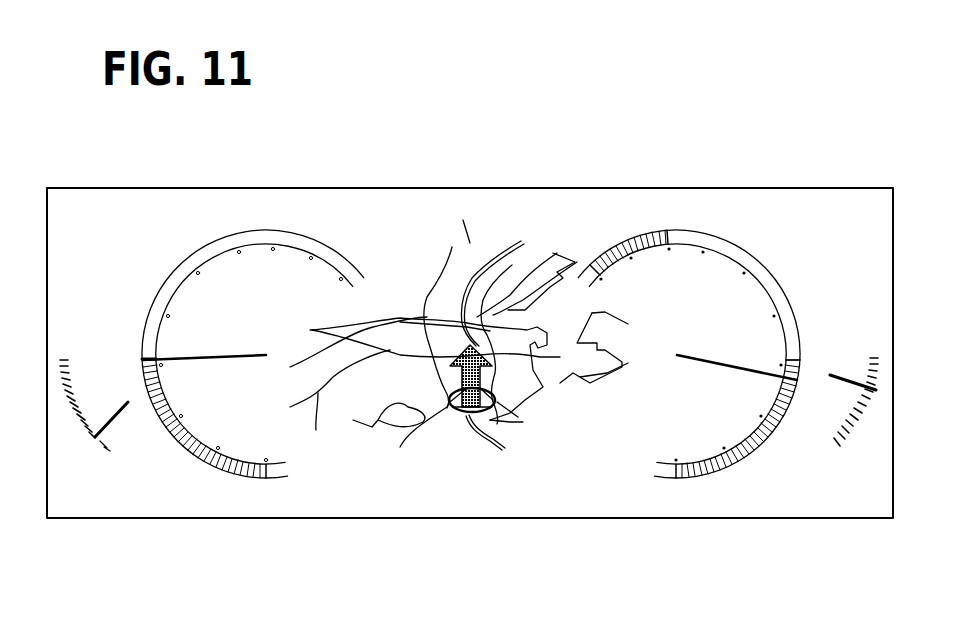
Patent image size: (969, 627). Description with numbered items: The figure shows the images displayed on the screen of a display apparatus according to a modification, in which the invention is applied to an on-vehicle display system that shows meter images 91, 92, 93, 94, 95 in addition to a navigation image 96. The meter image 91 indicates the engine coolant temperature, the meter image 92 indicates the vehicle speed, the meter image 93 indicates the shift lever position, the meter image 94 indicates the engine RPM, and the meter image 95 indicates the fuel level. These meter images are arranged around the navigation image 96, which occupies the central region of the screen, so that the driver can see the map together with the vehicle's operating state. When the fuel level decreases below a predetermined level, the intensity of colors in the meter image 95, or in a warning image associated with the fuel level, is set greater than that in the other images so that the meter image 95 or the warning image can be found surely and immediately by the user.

The meter image 91 is at (104, 441).
The meter image 92 is at (243, 443).
The meter image 93 is at (472, 468).
The meter image 94 is at (660, 438).
The meter image 95 is at (836, 445).
The navigation image 96 is at (470, 245).